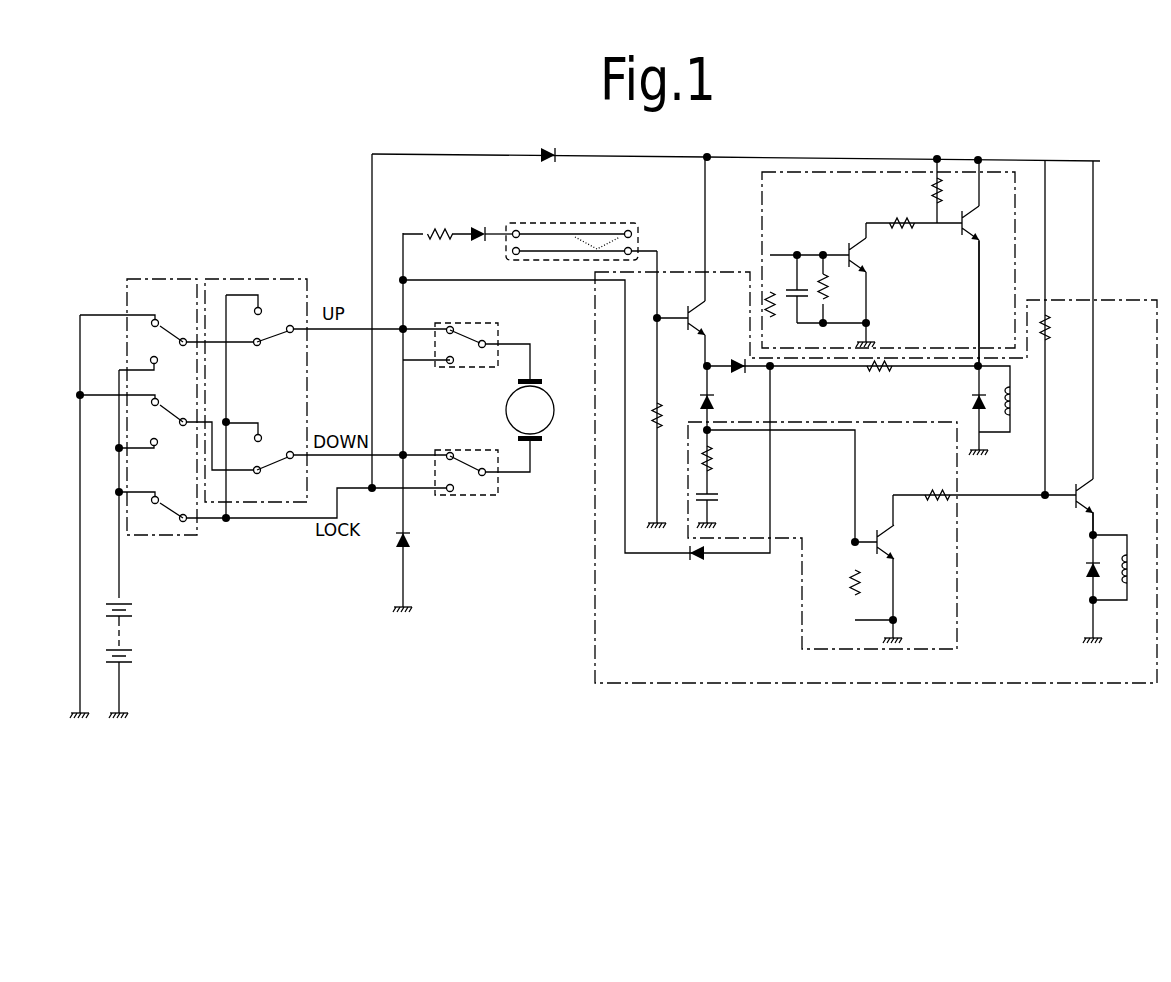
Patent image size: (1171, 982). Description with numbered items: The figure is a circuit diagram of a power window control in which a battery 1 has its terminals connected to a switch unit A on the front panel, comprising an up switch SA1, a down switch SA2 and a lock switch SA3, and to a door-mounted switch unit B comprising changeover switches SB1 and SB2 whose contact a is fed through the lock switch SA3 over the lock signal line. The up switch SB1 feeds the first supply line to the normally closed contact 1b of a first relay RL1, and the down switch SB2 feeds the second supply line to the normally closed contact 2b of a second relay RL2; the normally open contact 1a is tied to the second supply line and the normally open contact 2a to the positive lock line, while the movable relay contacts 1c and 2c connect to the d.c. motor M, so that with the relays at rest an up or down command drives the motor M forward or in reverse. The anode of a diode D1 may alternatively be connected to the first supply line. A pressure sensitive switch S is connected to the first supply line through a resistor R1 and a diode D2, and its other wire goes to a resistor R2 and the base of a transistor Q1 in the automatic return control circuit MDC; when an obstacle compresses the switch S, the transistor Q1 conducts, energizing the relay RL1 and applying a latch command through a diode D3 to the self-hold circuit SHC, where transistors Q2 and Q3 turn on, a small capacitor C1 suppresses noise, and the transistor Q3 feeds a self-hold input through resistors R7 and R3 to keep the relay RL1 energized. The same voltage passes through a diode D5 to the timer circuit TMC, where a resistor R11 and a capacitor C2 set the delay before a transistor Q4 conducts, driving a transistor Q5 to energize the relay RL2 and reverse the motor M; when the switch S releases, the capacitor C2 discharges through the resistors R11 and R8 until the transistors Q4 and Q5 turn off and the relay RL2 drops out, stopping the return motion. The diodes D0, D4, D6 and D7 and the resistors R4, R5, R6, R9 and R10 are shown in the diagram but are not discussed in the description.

The switch unit A is at (188, 279).
The switch unit B is at (298, 285).
The battery 1 is at (131, 612).
The up switch SA1 is at (132, 350).
The down switch SA2 is at (146, 427).
The lock switch SA3 is at (167, 524).
The up switch SB1 is at (283, 346).
The down switch SB2 is at (279, 499).
The diode D0 is at (417, 545).
The diode D1 is at (554, 169).
The diode D2 is at (492, 220).
The diode D3 is at (736, 351).
The diode D4 is at (702, 567).
The diode D5 is at (722, 403).
The diode D6 is at (966, 403).
The diode D7 is at (1080, 573).
The resistor R1 is at (437, 224).
The resistor R2 is at (670, 415).
The resistor R3 is at (760, 304).
The resistor R4 is at (836, 289).
The resistor R5 is at (902, 215).
The resistor R6 is at (951, 190).
The resistor R7 is at (879, 378).
The resistor R8 is at (844, 584).
The resistor R9 is at (937, 508).
The resistor R10 is at (1063, 329).
The resistor R11 is at (726, 459).
The capacitor C1 is at (804, 289).
The capacitor C2 is at (718, 499).
The transistor Q1 is at (681, 261).
The transistor Q2 is at (871, 273).
The transistor Q3 is at (973, 263).
The transistor Q4 is at (886, 557).
The transistor Q5 is at (1100, 348).
The pressure sensitive switch S is at (606, 226).
The d.c. motor M is at (530, 410).
The first relay RL1 is at (470, 330).
The second relay RL2 is at (488, 480).
The normally open contact 1a is at (450, 374).
The normally closed contact 1b is at (451, 312).
The relay contact 1c is at (512, 330).
The normally open contact 2a is at (450, 507).
The normally closed contact 2b is at (451, 435).
The relay contact 2c is at (512, 485).
The self-hold circuit SHC is at (762, 172).
The automatic return control circuit MDC is at (594, 626).
The timer circuit TMC is at (957, 612).